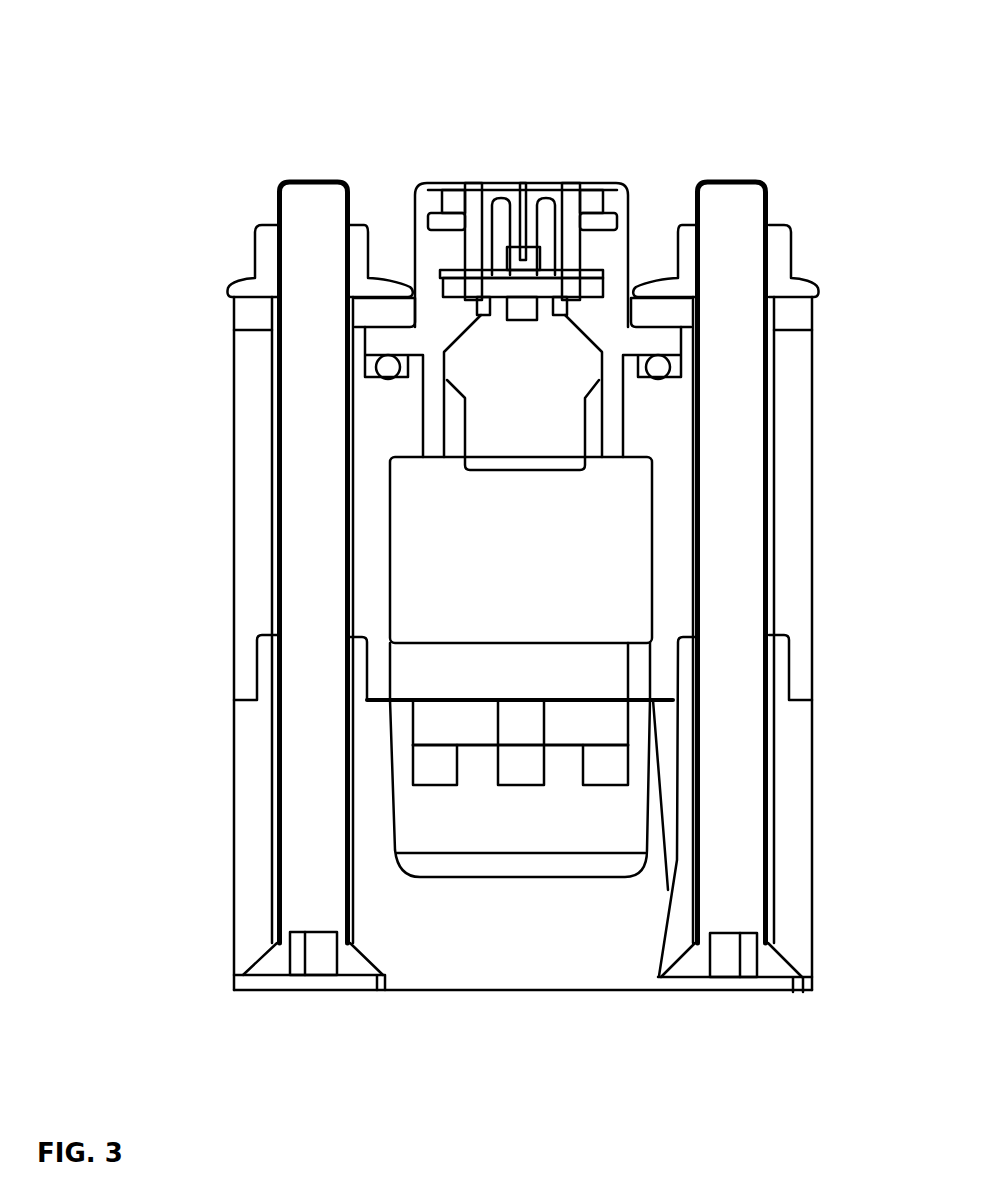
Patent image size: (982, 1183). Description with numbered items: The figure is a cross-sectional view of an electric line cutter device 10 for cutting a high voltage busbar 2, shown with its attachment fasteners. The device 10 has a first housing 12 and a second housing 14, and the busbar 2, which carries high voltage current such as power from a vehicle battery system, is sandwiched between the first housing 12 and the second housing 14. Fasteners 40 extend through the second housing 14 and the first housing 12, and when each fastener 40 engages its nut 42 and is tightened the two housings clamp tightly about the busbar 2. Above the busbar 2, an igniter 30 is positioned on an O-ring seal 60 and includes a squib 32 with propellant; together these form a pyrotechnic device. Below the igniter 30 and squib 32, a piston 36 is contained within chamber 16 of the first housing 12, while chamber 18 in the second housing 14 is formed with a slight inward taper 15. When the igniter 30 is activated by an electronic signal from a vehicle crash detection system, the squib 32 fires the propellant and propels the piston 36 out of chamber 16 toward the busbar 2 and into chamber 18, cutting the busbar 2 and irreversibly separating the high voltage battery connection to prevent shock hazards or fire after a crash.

The electric line cutter device 10 is at (96, 56).
The first housing 12 is at (262, 507).
The second housing 14 is at (242, 822).
The chamber 16 is at (420, 670).
The busbar 2 is at (420, 718).
The inward taper 15 is at (520, 825).
The chamber 18 is at (430, 825).
The igniter 30 is at (500, 190).
The squib 32 is at (545, 412).
The piston 36 is at (610, 602).
The fasteners 40 is at (257, 985).
The nut 42 is at (255, 245).
The O-ring seal 60 is at (671, 365).